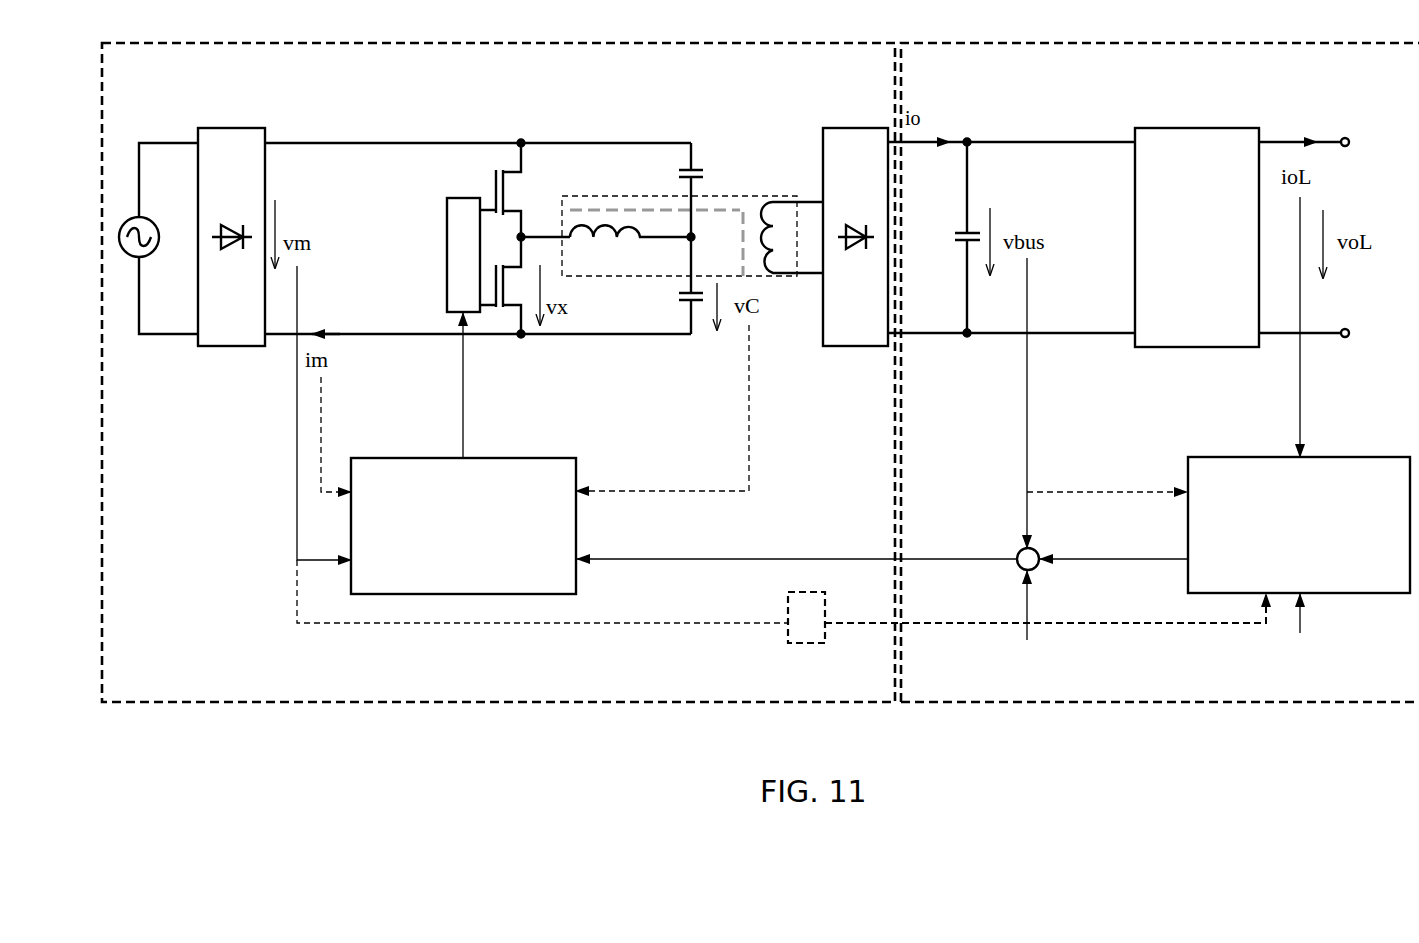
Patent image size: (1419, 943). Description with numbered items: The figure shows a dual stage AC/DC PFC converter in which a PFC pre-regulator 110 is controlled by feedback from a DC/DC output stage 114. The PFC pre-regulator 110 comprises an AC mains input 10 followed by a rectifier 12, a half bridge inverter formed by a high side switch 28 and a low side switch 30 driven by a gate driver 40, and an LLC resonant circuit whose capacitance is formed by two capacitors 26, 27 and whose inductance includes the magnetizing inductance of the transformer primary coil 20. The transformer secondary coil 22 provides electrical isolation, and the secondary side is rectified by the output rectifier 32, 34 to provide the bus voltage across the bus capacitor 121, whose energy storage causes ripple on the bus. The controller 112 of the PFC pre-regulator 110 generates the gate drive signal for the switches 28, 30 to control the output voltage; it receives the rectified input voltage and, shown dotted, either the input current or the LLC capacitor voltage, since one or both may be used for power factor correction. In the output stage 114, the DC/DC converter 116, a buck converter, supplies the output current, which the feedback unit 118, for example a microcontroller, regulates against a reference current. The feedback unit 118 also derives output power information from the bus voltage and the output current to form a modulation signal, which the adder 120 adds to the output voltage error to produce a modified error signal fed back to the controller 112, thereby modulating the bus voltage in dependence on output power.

The AC mains input 10 is at (133, 217).
The rectifier 12 is at (253, 128).
The primary coil 20 is at (672, 182).
The secondary coil 22 is at (785, 192).
The capacitor 26 is at (703, 168).
The capacitor 27 is at (697, 301).
The high side switch 28 is at (504, 172).
The low side switch 30 is at (507, 312).
The output rectifier 32 is at (854, 211).
The output rectifier 34 is at (855, 127).
The gate driver 40 is at (447, 228).
The PFC pre-regulator 110 is at (350, 705).
The controller 112 is at (576, 468).
The output stage 114 is at (1217, 705).
The DC/DC converter 116 is at (1168, 128).
The feedback unit 118 is at (1187, 474).
The adder 120 is at (1018, 552).
The bus capacitor 121 is at (977, 226).